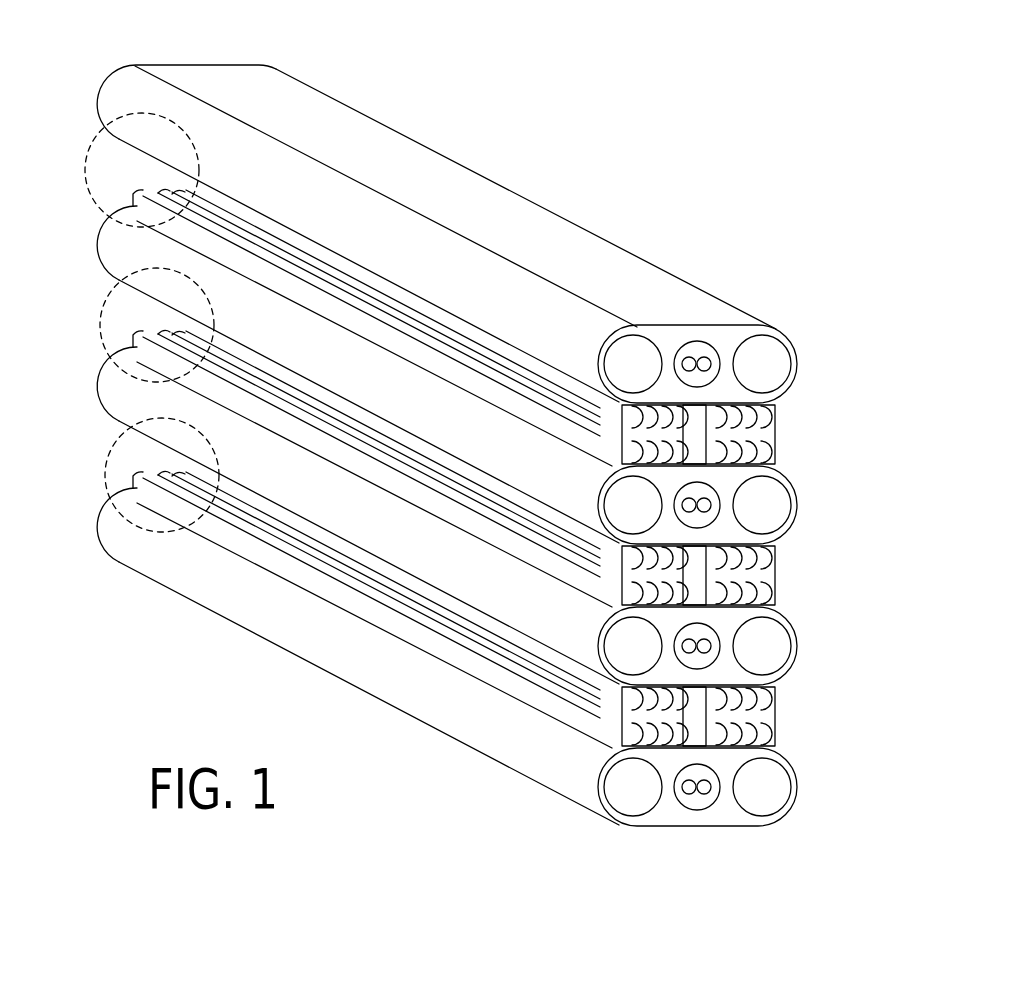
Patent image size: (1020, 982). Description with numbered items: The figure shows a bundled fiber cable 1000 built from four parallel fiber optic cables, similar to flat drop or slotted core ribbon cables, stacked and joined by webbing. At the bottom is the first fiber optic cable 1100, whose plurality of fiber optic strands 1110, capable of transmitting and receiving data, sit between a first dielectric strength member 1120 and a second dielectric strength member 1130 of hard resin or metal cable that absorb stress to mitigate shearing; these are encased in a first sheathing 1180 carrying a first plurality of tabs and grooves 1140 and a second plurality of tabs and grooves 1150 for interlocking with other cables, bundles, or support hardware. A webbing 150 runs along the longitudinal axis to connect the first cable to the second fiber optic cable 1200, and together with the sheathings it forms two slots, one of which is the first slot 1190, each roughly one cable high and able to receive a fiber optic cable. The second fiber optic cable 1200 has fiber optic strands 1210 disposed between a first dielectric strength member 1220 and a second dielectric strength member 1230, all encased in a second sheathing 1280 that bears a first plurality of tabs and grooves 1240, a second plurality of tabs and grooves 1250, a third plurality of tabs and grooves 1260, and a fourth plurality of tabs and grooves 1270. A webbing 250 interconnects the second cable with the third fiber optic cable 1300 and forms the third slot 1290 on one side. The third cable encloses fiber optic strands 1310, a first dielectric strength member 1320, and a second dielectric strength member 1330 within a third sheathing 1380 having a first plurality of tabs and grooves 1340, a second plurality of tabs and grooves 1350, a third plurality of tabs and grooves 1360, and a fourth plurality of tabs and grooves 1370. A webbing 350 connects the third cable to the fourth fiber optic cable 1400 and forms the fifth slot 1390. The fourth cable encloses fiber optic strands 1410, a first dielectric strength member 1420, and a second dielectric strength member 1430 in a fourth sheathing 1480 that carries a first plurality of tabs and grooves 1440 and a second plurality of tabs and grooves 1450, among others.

The bundled fiber cable 1000 is at (640, 169).
The first fiber optic cable 1100 is at (112, 564).
The plurality of fiber optic strands 1110 is at (705, 792).
The first dielectric strength member 1120 is at (633, 787).
The second dielectric strength member 1130 is at (762, 787).
The first plurality of tabs and grooves 1140 is at (600, 742).
The second plurality of tabs and grooves 1150 is at (775, 748).
The first sheathing 1180 is at (680, 826).
The first slot 1190 is at (105, 468).
The webbing 150 is at (712, 722).
The second fiber optic cable 1200 is at (100, 383).
The plurality of fiber optic strands 1210 is at (688, 648).
The first dielectric strength member 1220 is at (633, 646).
The second dielectric strength member 1230 is at (762, 646).
The first plurality of tabs and grooves 1240 is at (620, 684).
The second plurality of tabs and grooves 1250 is at (778, 690).
The third plurality of tabs and grooves 1260 is at (612, 602).
The fourth plurality of tabs and grooves 1270 is at (772, 606).
The second sheathing 1280 is at (369, 523).
The third slot 1290 is at (98, 302).
The webbing 250 is at (710, 577).
The third fiber optic cable 1300 is at (99, 237).
The plurality of fiber optic strands 1310 is at (688, 505).
The first dielectric strength member 1320 is at (633, 505).
The second dielectric strength member 1330 is at (762, 505).
The first plurality of tabs and grooves 1340 is at (640, 546).
The second plurality of tabs and grooves 1350 is at (778, 547).
The third plurality of tabs and grooves 1360 is at (612, 462).
The fourth plurality of tabs and grooves 1370 is at (735, 462).
The third sheathing 1380 is at (369, 382).
The fifth slot 1390 is at (84, 176).
The webbing 350 is at (708, 432).
The fourth fiber optic cable 1400 is at (147, 64).
The plurality of fiber optic strands 1410 is at (688, 356).
The first dielectric strength member 1420 is at (633, 364).
The second dielectric strength member 1430 is at (762, 364).
The first plurality of tabs and grooves 1440 is at (598, 360).
The second plurality of tabs and grooves 1450 is at (778, 405).
The fourth sheathing 1480 is at (720, 330).